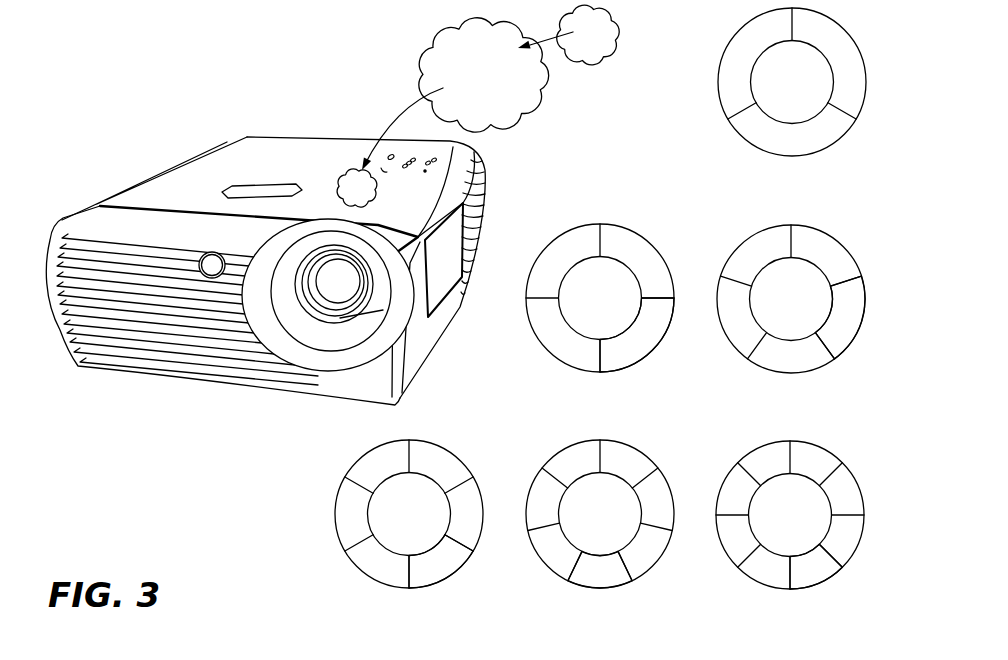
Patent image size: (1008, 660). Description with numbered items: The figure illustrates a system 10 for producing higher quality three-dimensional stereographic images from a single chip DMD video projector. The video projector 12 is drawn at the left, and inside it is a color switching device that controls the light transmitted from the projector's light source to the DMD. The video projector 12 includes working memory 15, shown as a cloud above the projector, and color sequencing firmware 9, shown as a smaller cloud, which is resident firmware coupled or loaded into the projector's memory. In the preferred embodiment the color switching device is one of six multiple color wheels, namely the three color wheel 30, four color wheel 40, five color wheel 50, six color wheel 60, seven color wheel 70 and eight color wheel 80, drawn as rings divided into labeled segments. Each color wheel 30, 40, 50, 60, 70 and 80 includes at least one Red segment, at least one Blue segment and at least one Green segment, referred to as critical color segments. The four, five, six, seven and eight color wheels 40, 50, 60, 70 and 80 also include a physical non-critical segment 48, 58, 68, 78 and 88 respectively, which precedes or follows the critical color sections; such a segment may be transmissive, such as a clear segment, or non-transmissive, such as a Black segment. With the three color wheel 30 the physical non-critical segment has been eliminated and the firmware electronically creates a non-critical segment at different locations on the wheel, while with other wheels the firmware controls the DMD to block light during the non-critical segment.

The system 10 is at (120, 41).
The video projector 12 is at (217, 138).
The color sequencing firmware 9 is at (568, 35).
The working memory 15 is at (455, 94).
The three color wheel 30 is at (835, 24).
The four color wheel 40 is at (647, 243).
The non-critical segment 48 is at (620, 355).
The five color wheel 50 is at (842, 243).
The non-critical segment 58 is at (838, 332).
The six color wheel 60 is at (453, 456).
The non-critical segment 68 is at (430, 574).
The seven color wheel 70 is at (645, 457).
The non-critical segment 78 is at (600, 560).
The eight color wheel 80 is at (838, 458).
The non-critical segment 88 is at (807, 558).